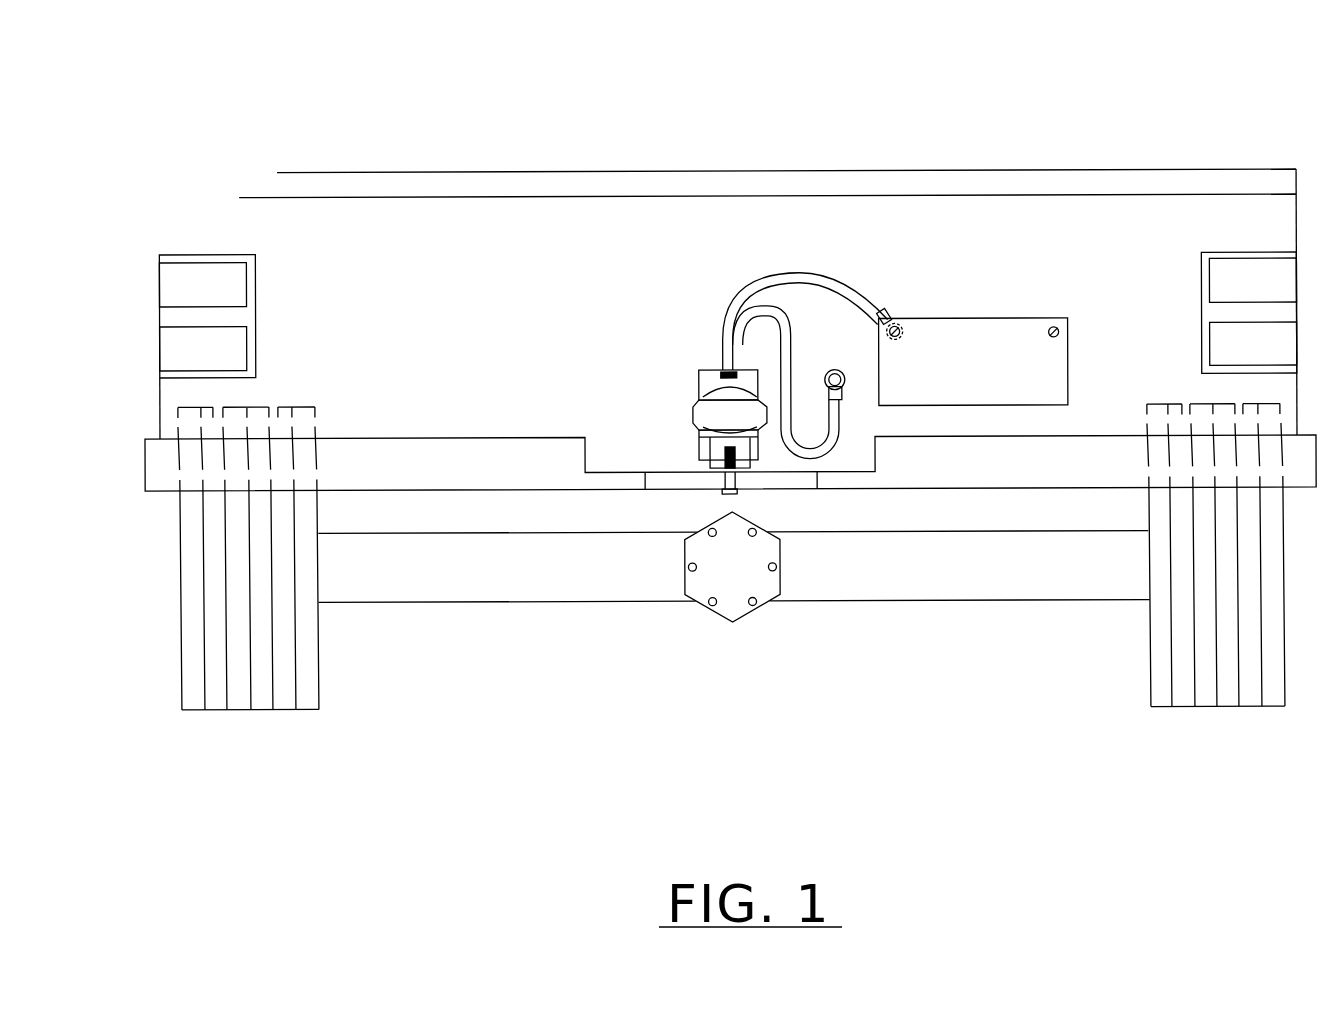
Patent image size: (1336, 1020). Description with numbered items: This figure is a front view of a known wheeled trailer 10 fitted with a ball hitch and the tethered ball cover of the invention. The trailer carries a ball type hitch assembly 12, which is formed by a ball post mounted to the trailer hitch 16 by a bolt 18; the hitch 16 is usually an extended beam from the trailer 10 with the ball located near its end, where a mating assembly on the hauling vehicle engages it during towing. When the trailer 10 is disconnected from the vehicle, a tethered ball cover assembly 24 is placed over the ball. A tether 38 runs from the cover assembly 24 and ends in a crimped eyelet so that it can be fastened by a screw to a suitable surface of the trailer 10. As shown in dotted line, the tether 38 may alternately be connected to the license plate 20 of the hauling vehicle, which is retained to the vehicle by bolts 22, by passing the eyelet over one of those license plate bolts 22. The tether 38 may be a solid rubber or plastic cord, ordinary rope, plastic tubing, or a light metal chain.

The wheeled trailer 10 is at (1112, 144).
The ball type hitch assembly 12 is at (687, 456).
The trailer hitch 16 is at (632, 489).
The bolt 18 is at (737, 494).
The license plate 20 is at (970, 328).
The license plate bolts 22 is at (898, 326).
The tethered ball cover assembly 24 is at (703, 346).
The tether 38 is at (830, 273).